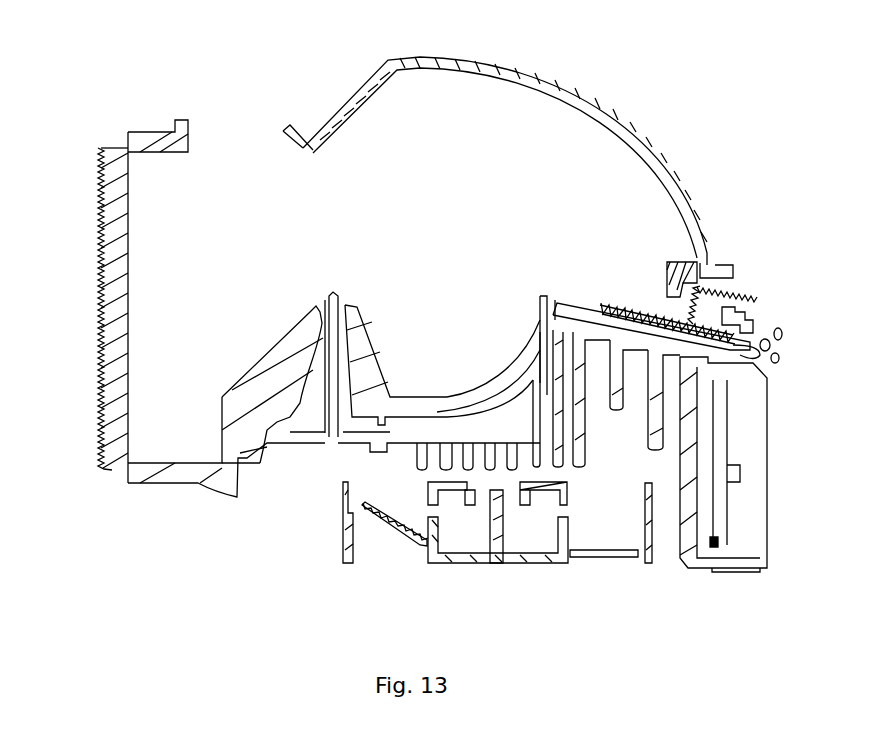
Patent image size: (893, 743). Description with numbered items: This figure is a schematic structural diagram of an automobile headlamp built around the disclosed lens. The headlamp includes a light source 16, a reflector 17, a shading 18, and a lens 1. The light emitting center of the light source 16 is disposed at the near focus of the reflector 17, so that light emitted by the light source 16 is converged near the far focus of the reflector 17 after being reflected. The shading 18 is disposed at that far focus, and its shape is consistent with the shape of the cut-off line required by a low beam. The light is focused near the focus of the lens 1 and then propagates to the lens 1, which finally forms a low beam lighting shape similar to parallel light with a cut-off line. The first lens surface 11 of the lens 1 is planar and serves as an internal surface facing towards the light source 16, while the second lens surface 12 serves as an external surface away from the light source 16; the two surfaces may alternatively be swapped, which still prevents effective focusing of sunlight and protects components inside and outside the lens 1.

The lens 1 is at (115, 215).
The first lens surface 11 is at (128, 207).
The second lens surface 12 is at (103, 167).
The light source 16 is at (569, 312).
The reflector 17 is at (326, 315).
The shading 18 is at (497, 66).